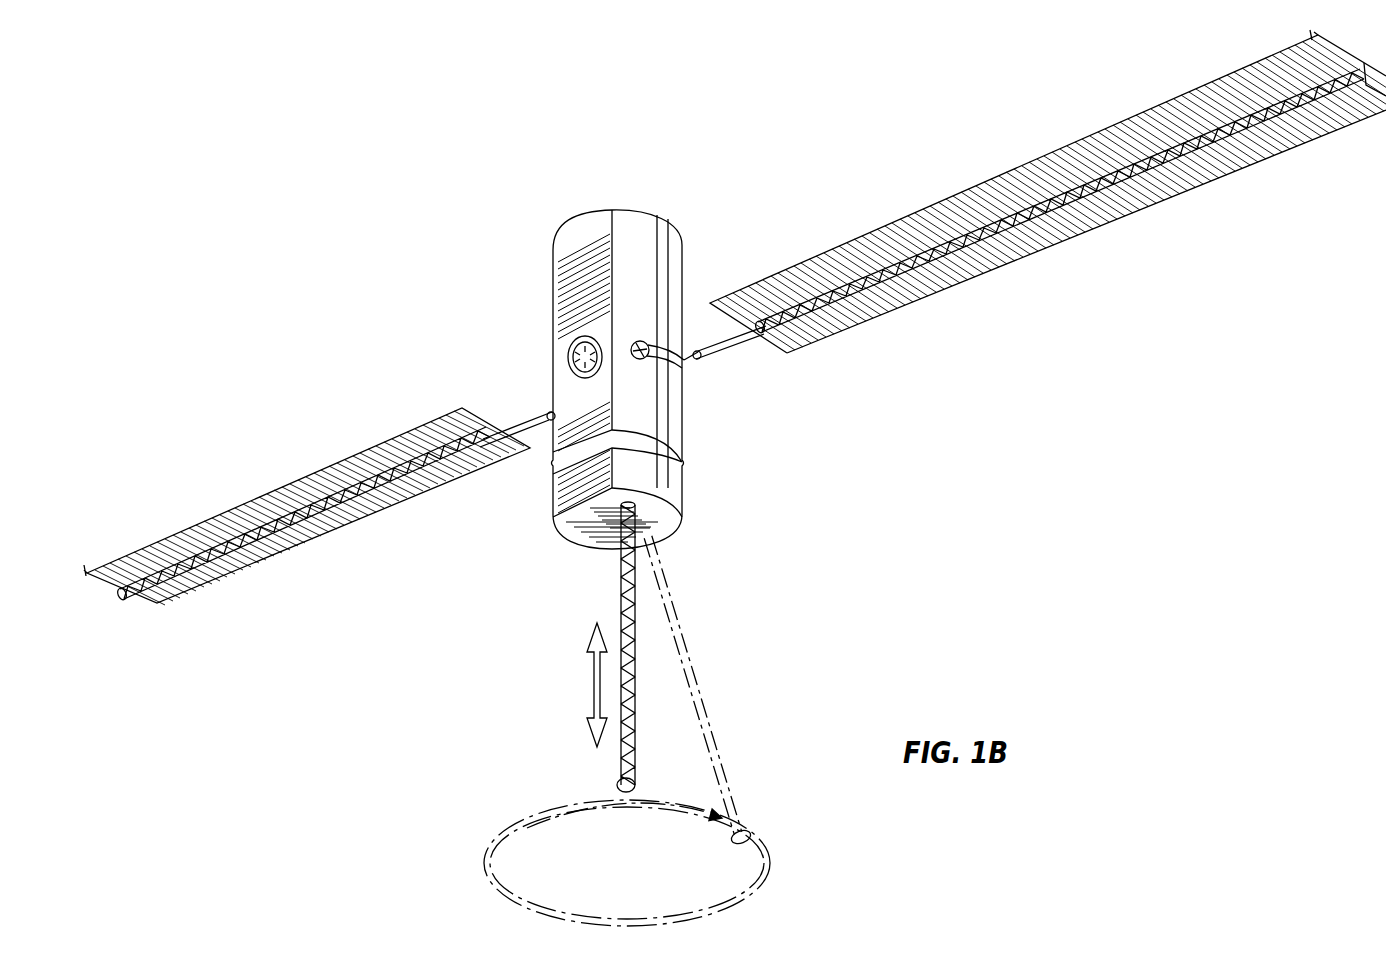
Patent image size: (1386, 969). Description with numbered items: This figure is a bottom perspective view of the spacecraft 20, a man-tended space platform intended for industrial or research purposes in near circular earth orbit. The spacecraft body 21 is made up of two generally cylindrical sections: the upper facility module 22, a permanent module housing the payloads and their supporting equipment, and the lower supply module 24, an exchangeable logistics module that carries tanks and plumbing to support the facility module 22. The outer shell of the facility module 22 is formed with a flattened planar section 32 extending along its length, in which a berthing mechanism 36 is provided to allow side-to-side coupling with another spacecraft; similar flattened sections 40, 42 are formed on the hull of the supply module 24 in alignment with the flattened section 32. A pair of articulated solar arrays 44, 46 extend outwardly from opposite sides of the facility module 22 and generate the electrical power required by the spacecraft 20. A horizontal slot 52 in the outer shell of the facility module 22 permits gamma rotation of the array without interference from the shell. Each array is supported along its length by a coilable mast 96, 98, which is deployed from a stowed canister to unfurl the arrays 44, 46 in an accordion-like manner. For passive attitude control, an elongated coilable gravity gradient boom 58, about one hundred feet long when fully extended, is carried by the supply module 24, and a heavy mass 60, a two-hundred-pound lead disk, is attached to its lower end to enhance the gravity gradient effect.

The spacecraft 20 is at (478, 302).
The spacecraft body 21 is at (692, 416).
The facility module 22 is at (644, 227).
The supply module 24 is at (670, 488).
The flattened section 32 is at (583, 238).
The berthing mechanism 36 is at (578, 340).
The flattened section 40 is at (567, 493).
The flattened section 42 is at (668, 530).
The solar array 44 is at (345, 528).
The solar array 46 is at (1155, 212).
The horizontal slot 52 is at (662, 345).
The boom 58 is at (618, 578).
The mass 60 is at (614, 786).
The coilable mast 96 is at (222, 565).
The coilable mast 98 is at (1275, 118).